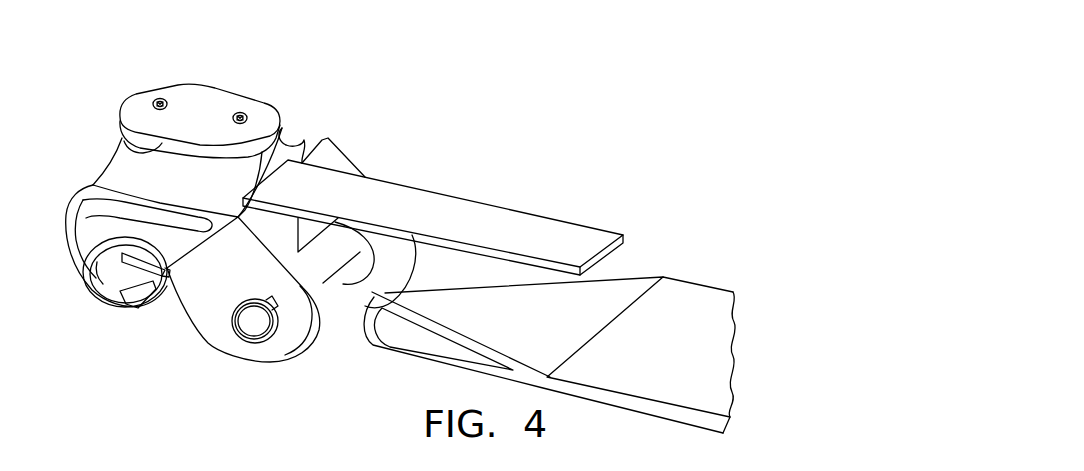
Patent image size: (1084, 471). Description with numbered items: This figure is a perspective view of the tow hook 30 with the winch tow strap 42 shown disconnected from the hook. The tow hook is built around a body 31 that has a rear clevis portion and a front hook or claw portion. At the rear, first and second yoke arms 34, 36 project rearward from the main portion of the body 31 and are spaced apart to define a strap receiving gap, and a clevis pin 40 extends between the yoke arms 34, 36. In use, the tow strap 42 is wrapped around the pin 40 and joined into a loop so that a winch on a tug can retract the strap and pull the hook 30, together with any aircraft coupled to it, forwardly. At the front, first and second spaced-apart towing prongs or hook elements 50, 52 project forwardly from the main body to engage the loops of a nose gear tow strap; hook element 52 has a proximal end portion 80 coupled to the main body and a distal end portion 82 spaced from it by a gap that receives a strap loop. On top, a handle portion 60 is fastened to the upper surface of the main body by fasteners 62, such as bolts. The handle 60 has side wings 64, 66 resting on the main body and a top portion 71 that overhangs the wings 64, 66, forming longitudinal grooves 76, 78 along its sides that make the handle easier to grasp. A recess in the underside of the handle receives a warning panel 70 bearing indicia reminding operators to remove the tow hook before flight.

The tow hook 30 is at (196, 56).
The body 31 is at (78, 223).
The first yoke arm 34 is at (341, 166).
The second yoke arm 36 is at (253, 352).
The clevis pin 40 is at (326, 282).
The tow strap 42 is at (663, 307).
The first hook element 50 is at (169, 275).
The second hook element 52 is at (100, 276).
The handle portion 60 is at (115, 101).
The fasteners 62 is at (160, 98).
The first side wing 64 is at (291, 148).
The second side wing 66 is at (130, 168).
The warning panel 70 is at (462, 198).
The top portion 71 is at (219, 106).
The first groove 76 is at (284, 140).
The second groove 78 is at (122, 141).
The proximal end portion 80 is at (100, 255).
The distal end portion 82 is at (145, 296).